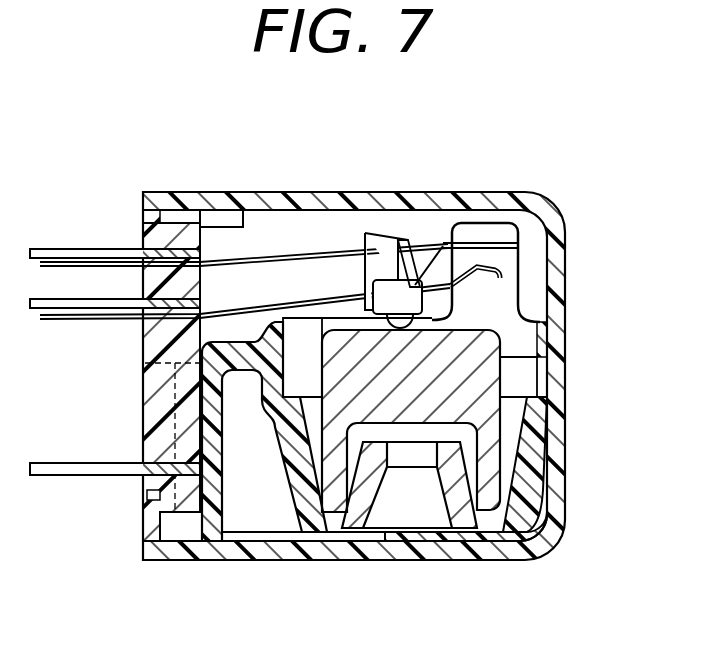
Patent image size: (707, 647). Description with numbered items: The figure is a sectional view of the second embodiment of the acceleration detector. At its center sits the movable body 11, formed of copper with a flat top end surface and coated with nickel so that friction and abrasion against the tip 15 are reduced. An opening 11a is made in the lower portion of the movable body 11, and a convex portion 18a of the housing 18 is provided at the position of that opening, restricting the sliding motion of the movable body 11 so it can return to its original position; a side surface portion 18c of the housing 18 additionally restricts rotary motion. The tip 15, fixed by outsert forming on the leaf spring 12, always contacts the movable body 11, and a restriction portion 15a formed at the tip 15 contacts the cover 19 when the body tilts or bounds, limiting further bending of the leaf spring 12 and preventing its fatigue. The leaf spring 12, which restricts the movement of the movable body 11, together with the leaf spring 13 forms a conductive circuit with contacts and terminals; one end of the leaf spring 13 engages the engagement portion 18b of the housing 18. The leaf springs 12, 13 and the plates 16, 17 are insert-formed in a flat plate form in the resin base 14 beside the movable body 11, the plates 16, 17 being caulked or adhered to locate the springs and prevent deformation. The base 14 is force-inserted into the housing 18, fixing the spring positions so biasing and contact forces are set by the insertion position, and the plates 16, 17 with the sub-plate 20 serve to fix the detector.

The movable body 11 is at (483, 363).
The opening 11a is at (460, 437).
The leaf spring 12 is at (317, 297).
The leaf spring 13 is at (257, 262).
The base 14 is at (150, 350).
The tip 15 is at (422, 240).
The restriction portion 15a is at (378, 250).
The plate 16 is at (138, 305).
The plate 17 is at (140, 250).
The housing 18 is at (327, 525).
The convex portion 18a is at (394, 522).
The engagement portion 18b is at (540, 248).
The side surface portion 18c is at (540, 390).
The cover 19 is at (450, 562).
The sub-plate 20 is at (70, 472).